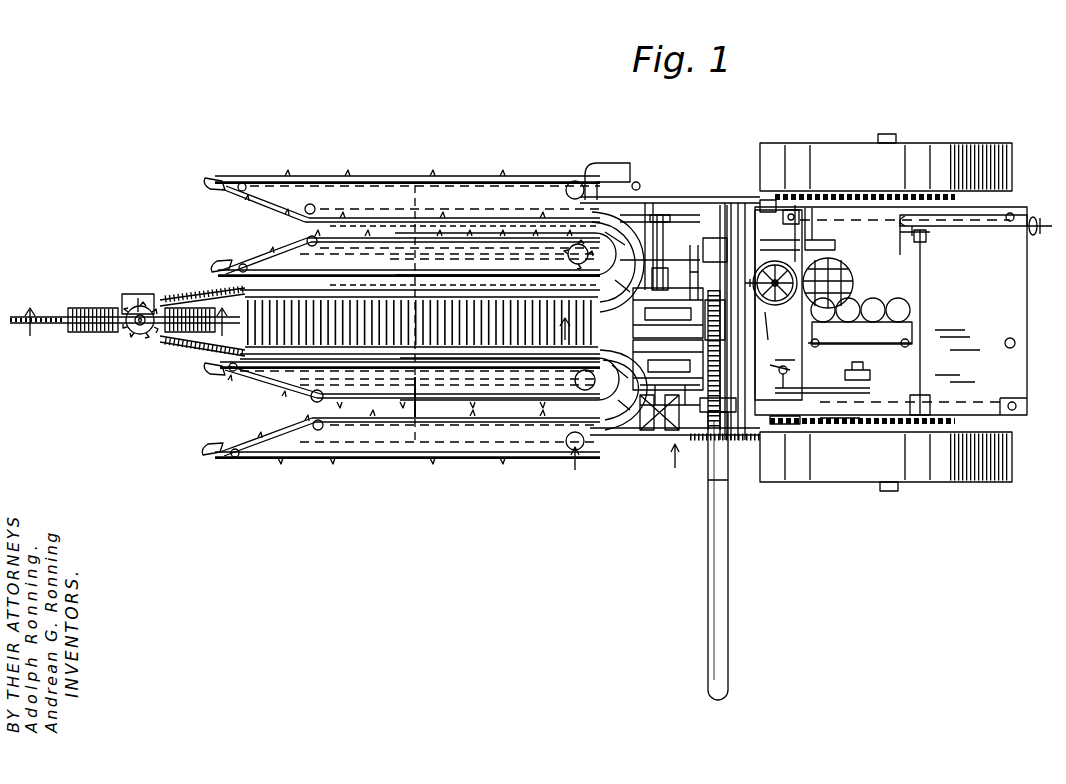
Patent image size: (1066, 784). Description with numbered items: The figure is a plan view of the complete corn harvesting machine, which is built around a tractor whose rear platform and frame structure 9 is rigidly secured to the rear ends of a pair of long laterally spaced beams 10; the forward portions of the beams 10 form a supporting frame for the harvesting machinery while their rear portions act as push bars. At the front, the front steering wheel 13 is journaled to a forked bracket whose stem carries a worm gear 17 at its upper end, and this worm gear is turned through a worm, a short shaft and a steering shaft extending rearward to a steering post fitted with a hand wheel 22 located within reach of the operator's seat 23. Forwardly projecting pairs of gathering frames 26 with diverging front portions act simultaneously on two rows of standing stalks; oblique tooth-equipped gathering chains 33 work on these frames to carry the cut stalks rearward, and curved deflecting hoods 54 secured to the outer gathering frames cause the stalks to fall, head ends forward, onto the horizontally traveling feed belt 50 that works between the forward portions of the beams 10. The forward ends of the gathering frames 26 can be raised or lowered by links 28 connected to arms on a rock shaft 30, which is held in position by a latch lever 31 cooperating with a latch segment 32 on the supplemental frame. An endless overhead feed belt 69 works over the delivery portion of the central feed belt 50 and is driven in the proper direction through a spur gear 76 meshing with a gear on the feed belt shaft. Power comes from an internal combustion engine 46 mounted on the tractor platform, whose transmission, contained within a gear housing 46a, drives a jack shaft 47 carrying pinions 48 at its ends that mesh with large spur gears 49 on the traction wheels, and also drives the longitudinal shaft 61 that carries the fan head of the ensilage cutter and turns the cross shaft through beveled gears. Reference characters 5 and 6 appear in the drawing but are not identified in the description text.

The direction arrow / frame member 5 is at (563, 328).
The supporting frame members 6 is at (624, 467).
The rear platform and frame structure 9 is at (1018, 368).
The beams 10 is at (205, 287).
The front steering wheel 13 is at (98, 332).
The worm gear 17 is at (140, 336).
The hand wheel 22 is at (797, 275).
The operator's seat 23 is at (853, 274).
The gathering frames 26 is at (506, 440).
The links 28 is at (732, 442).
The rock shaft 30 is at (778, 426).
The latch lever 31 is at (800, 210).
The latch segment 32 is at (762, 198).
The gathering chains 33 is at (500, 178).
The internal combustion engine 46 is at (815, 346).
The gear housing 46a is at (842, 428).
The jack shaft 47 is at (815, 232).
The pinions 48 is at (710, 500).
The spur gears 49 is at (935, 188).
The feed belt 50 is at (362, 344).
The deflecting plates or hoods 54 is at (642, 216).
The longitudinal shaft 61 is at (777, 326).
The overhead feed belt 69 is at (688, 292).
The spur gear 76 is at (672, 240).